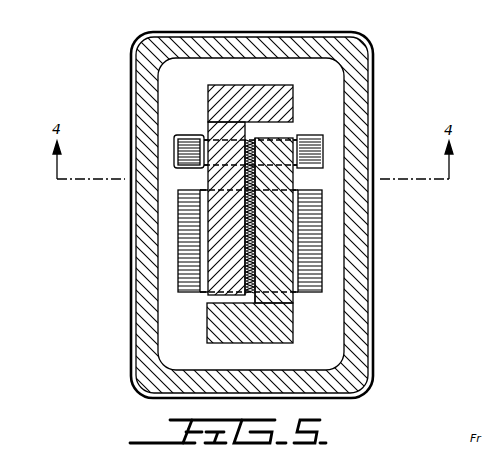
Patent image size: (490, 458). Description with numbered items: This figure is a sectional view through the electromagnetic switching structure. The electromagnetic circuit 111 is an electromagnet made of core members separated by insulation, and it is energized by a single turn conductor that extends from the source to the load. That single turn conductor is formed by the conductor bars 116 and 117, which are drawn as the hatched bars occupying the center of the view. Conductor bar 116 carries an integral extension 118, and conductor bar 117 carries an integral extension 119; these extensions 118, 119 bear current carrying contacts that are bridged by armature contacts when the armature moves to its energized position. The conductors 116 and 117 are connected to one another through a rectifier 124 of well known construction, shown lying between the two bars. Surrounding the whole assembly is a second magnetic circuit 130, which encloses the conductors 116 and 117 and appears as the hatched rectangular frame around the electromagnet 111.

The electromagnetic circuit 111 is at (331, 141).
The conductor bar 116 is at (293, 103).
The conductor bar 117 is at (294, 327).
The integral extension 118 is at (213, 236).
The integral extension 119 is at (303, 235).
The rectifier 124 is at (250, 166).
The second magnetic circuit 130 is at (326, 275).